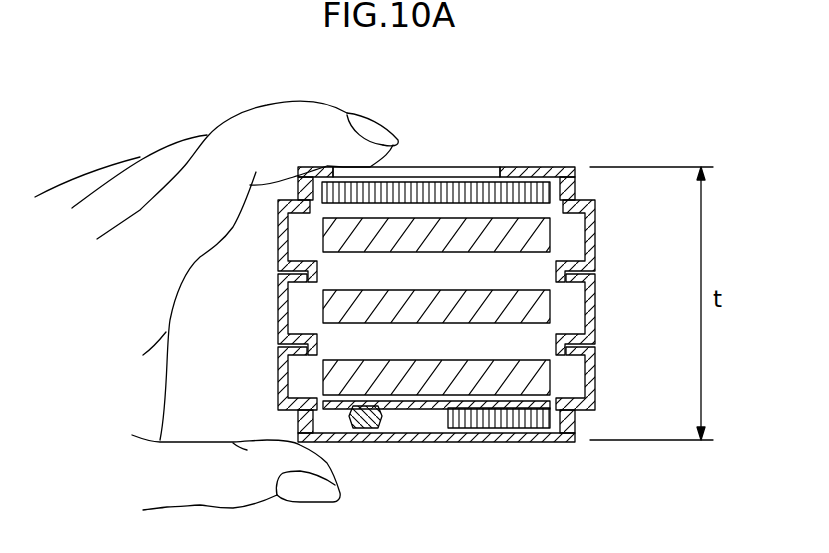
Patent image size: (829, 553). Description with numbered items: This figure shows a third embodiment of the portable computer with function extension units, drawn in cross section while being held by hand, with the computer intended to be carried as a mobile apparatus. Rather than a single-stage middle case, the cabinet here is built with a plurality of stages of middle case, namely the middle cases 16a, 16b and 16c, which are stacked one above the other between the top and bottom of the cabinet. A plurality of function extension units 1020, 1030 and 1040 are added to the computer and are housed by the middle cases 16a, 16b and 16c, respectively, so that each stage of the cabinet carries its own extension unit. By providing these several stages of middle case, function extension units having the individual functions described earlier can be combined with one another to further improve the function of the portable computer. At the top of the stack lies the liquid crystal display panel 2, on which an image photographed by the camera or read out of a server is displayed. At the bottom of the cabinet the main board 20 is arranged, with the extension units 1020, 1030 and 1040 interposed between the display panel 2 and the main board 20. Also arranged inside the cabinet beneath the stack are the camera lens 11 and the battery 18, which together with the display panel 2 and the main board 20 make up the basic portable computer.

The liquid crystal display panel 2 is at (470, 192).
The middle case 16a is at (596, 218).
The middle case 16b is at (596, 292).
The middle case 16c is at (596, 364).
The function extension unit 1020 is at (538, 238).
The function extension unit 1030 is at (538, 311).
The function extension unit 1040 is at (538, 386).
The main board 20 is at (417, 404).
The camera lens 11 is at (371, 428).
The battery 18 is at (529, 428).